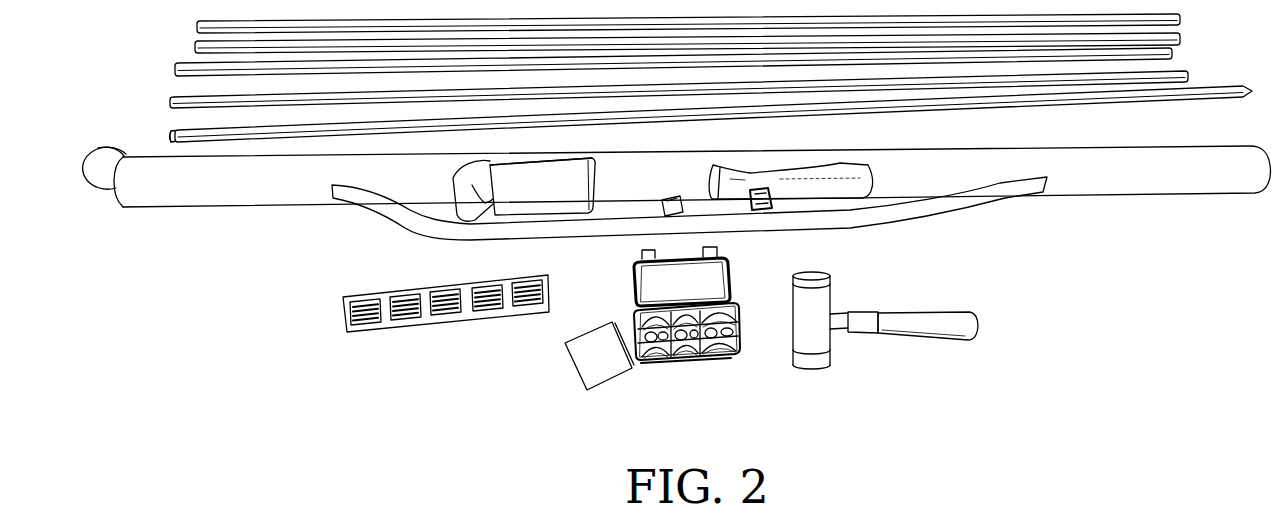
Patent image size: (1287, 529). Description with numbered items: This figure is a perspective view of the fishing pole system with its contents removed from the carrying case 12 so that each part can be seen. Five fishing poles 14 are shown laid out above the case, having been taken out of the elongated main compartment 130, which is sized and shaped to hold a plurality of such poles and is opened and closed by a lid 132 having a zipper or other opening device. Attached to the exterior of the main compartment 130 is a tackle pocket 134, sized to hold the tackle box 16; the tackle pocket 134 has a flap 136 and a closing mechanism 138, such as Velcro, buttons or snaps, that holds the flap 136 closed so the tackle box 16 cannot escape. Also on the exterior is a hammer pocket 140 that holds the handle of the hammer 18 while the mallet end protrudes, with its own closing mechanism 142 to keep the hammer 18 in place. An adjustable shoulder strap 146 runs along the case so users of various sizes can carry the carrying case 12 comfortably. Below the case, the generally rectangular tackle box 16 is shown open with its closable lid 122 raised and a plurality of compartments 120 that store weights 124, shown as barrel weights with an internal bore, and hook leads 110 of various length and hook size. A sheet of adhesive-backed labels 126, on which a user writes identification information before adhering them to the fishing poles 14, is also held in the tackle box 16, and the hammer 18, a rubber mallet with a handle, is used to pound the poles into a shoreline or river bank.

The carrying case 12 is at (655, 191).
The fishing poles 14 is at (197, 27).
The tackle box 16 is at (685, 329).
The hammer 18 is at (935, 306).
The hook lead 110 is at (685, 329).
The compartments 120 is at (723, 353).
The closable lid 122 is at (642, 272).
The weights 124 is at (711, 356).
The labels 126 is at (530, 298).
The main compartment 130 is at (110, 197).
The lid 132 is at (96, 150).
The tackle pocket 134 is at (547, 187).
The flap 136 is at (483, 210).
The closing mechanism 138 is at (490, 164).
The hammer pocket 140 is at (840, 185).
The closing mechanism 142 is at (678, 200).
The adjustable shoulder strap 146 is at (927, 215).